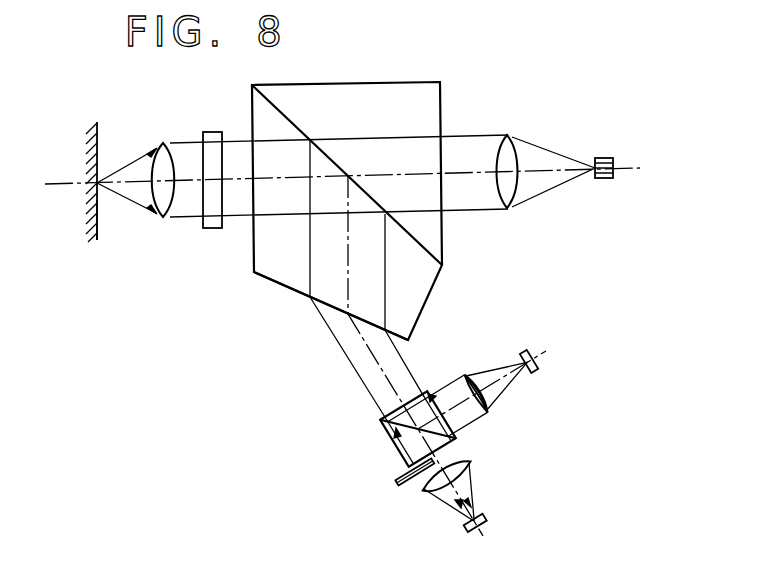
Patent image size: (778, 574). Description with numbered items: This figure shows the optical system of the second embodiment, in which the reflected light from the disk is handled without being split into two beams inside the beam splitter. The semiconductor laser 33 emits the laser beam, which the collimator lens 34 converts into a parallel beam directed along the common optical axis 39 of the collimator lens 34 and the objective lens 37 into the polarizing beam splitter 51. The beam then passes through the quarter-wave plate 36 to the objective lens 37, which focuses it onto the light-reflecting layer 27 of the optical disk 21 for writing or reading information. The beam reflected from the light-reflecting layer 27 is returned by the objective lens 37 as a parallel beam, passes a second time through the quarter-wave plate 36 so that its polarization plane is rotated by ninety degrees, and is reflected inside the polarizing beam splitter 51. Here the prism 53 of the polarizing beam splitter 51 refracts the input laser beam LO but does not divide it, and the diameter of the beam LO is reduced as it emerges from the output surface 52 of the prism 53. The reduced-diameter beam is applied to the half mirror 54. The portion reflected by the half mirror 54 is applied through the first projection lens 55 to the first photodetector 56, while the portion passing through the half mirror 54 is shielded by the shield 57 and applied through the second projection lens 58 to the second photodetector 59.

The optical disk 21 is at (93, 226).
The light-reflecting layer 27 is at (98, 221).
The semiconductor laser 33 is at (604, 157).
The collimator lens 34 is at (517, 140).
The quarter-wave plate 36 is at (210, 131).
The objective lens 37 is at (155, 157).
The common optical axis 39 is at (538, 172).
The polarizing beam splitter 51 is at (441, 82).
The output surface 52 is at (286, 287).
The prism 53 is at (308, 298).
The half mirror 54 is at (400, 459).
The first projection lens 55 is at (472, 377).
The first photodetector 56 is at (529, 357).
The shield 57 is at (406, 492).
The second projection lens 58 is at (472, 466).
The second photodetector 59 is at (469, 526).
The input laser beam LO is at (461, 135).